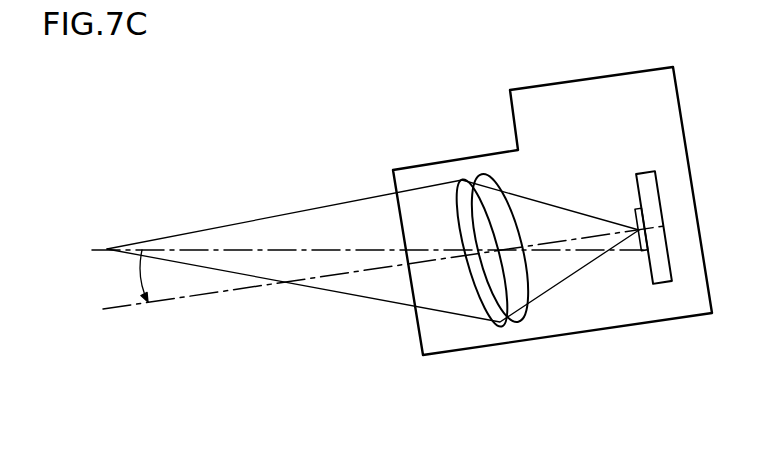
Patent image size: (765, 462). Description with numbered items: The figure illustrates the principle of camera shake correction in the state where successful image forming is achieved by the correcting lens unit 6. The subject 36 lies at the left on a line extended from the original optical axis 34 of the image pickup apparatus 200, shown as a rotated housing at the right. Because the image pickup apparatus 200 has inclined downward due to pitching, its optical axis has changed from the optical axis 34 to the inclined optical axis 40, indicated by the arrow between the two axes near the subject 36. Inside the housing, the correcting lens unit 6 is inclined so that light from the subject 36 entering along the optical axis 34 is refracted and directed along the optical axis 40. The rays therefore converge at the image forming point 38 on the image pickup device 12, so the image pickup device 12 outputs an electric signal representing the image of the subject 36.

The image pickup apparatus 200 is at (607, 92).
The correcting lens unit 6 is at (460, 200).
The image pickup device 12 is at (662, 268).
The image forming point 38 is at (638, 237).
The optical axis 34 is at (283, 249).
The optical axis 40 is at (239, 289).
The subject 36 is at (107, 249).